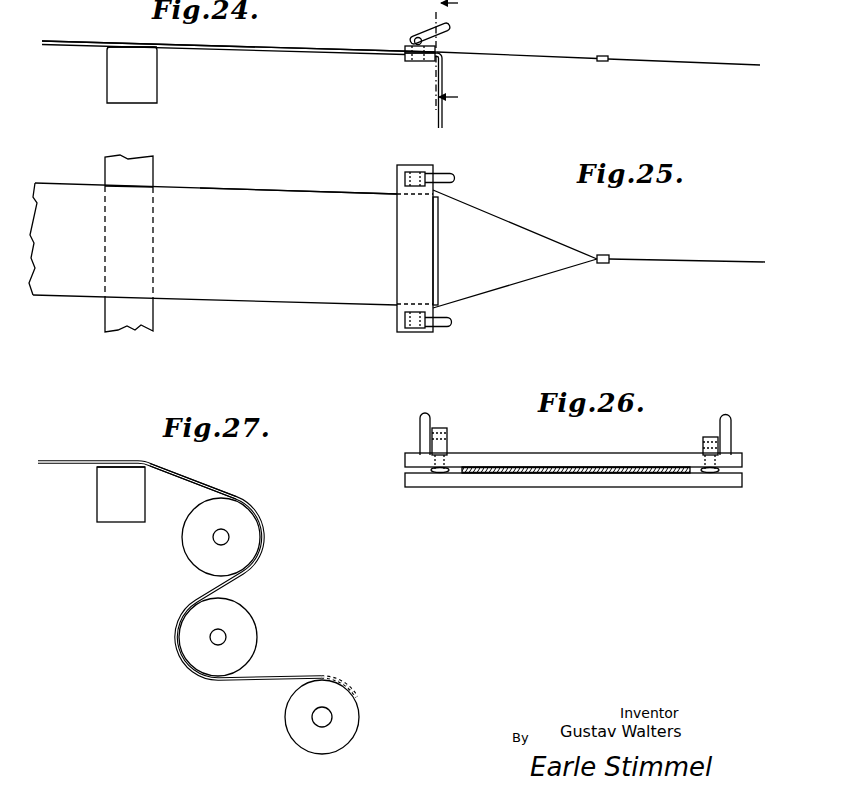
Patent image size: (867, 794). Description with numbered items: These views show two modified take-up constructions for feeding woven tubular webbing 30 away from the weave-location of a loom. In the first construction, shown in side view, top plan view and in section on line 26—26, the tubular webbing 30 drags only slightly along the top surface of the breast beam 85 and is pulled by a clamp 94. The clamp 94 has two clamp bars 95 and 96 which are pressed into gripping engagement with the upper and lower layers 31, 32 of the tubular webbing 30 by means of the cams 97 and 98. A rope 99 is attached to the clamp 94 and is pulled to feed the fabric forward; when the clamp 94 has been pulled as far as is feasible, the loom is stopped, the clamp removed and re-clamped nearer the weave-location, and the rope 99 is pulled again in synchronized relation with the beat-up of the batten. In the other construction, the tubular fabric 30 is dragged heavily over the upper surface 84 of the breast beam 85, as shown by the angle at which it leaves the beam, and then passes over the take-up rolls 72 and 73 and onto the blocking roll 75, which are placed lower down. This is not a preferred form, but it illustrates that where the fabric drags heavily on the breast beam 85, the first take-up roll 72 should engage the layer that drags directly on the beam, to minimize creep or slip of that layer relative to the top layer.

In FIG. 24, the section line 26 is at (461, 55).
In FIG. 24, the tubular webbing 30 is at (61, 41).
In FIG. 25, the tubular webbing 30 is at (244, 188).
In FIG. 26, the tubular webbing 30 is at (535, 474).
In FIG. 27, the tubular webbing 30 is at (62, 461).
In FIG. 24, the upper layer 31 is at (325, 50).
In FIG. 25, the upper layer 31 is at (284, 203).
In FIG. 26, the upper layer 31 is at (577, 467).
In FIG. 27, the upper layer 31 is at (195, 482).
In FIG. 24, the lower layer 32 is at (313, 56).
In FIG. 26, the lower layer 32 is at (596, 480).
In FIG. 27, the lower layer 32 is at (188, 486).
In FIG. 27, the take-up roll 72 is at (190, 545).
In FIG. 27, the take-up roll 73 is at (246, 626).
In FIG. 27, the blocking roll 75 is at (312, 718).
In FIG. 24, the upper surface 84 is at (129, 46).
In FIG. 25, the upper surface 84 is at (112, 171).
In FIG. 27, the upper surface 84 is at (117, 466).
In FIG. 24, the breast beam 85 is at (151, 80).
In FIG. 25, the breast beam 85 is at (158, 168).
In FIG. 27, the breast beam 85 is at (100, 503).
In FIG. 24, the clamp 94 is at (416, 60).
In FIG. 25, the clamp 94 is at (398, 251).
In FIG. 26, the clamp 94 is at (558, 466).
In FIG. 24, the clamp bar 95 is at (404, 46).
In FIG. 25, the clamp bar 95 is at (405, 234).
In FIG. 26, the clamp bar 95 is at (504, 453).
In FIG. 24, the clamp bar 96 is at (407, 62).
In FIG. 26, the clamp bar 96 is at (494, 488).
In FIG. 25, the cam 97 is at (423, 172).
In FIG. 26, the cam 97 is at (733, 456).
In FIG. 24, the cam 98 is at (430, 43).
In FIG. 25, the cam 98 is at (417, 333).
In FIG. 26, the cam 98 is at (420, 444).
In FIG. 24, the rope 99 is at (683, 62).
In FIG. 25, the rope 99 is at (681, 263).
In FIG. 26, the rope 99 is at (443, 474).